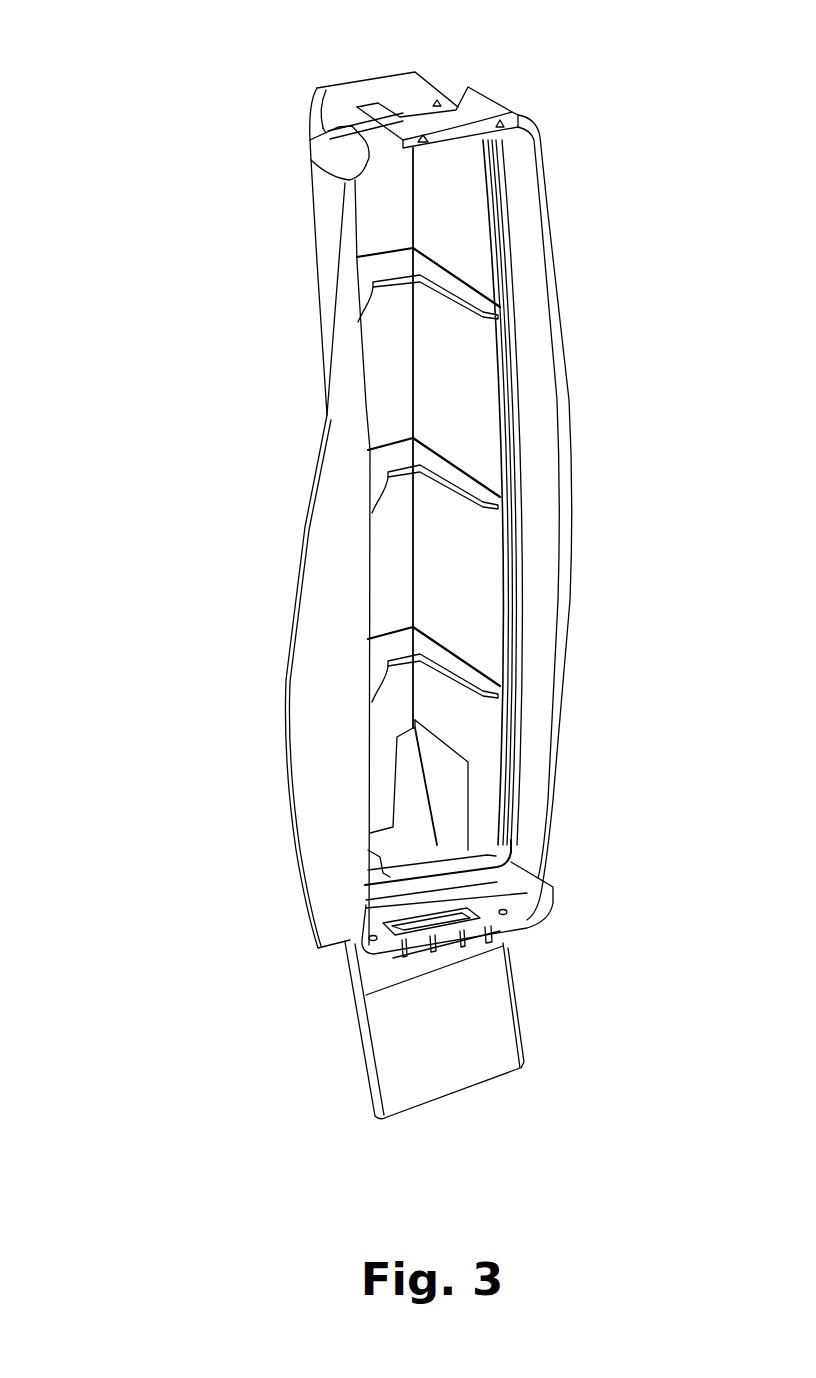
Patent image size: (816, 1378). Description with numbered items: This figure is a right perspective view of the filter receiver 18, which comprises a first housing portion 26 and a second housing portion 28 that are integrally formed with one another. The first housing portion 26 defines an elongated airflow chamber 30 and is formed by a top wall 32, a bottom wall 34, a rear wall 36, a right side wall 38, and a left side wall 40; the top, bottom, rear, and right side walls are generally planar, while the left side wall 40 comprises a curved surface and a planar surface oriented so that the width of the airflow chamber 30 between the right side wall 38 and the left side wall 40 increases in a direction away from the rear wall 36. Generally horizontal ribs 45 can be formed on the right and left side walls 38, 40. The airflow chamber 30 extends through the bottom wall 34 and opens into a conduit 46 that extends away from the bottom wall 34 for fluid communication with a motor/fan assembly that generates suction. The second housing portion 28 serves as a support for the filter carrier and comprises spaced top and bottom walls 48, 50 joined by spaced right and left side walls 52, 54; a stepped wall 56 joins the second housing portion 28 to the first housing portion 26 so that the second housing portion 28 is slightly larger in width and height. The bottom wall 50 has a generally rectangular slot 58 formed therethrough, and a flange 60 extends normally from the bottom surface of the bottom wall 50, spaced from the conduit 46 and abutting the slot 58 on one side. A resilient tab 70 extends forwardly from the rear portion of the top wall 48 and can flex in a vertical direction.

The filter receiver 18 is at (95, 172).
The first housing portion 26 is at (309, 127).
The second housing portion 28 is at (315, 262).
The airflow chamber 30 is at (381, 411).
The top wall 32 is at (380, 93).
The bottom wall 34 is at (435, 878).
The rear wall 36 is at (375, 338).
The right side wall 38 is at (478, 355).
The left side wall 40 is at (318, 126).
The ribs 45 is at (454, 285).
The conduit 46 is at (397, 1050).
The top wall 48 is at (330, 150).
The bottom wall 50 is at (495, 910).
The right side wall 52 is at (538, 408).
The left side wall 54 is at (328, 192).
The stepped wall 56 is at (520, 452).
The slot 58 is at (430, 919).
The flange 60 is at (376, 972).
The resilient tab 70 is at (476, 86).